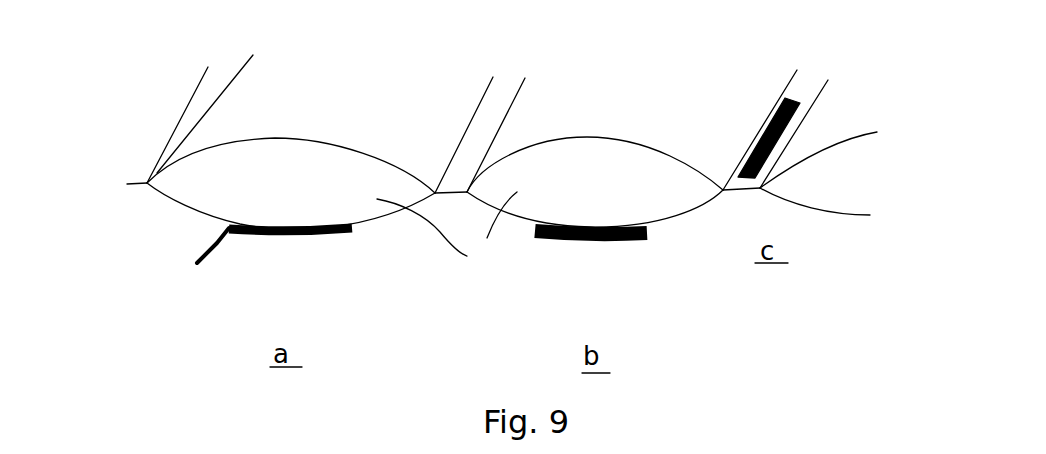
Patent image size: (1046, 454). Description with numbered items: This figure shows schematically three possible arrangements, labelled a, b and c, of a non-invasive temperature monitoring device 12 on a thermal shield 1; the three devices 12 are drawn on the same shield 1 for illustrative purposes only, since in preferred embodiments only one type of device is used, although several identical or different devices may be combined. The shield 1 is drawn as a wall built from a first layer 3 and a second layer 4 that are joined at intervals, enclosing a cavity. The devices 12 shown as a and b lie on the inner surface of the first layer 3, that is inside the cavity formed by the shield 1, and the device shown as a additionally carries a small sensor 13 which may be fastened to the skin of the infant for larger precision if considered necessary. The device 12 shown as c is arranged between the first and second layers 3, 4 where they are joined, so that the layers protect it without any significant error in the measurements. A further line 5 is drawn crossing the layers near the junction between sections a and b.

The thermal shield 1 is at (673, 62).
The first layer 3 is at (853, 215).
The second layer 4 is at (847, 132).
The crossing fiber 5 is at (447, 237).
The temperature monitoring device 12 is at (320, 237).
The sensor 13 is at (210, 257).